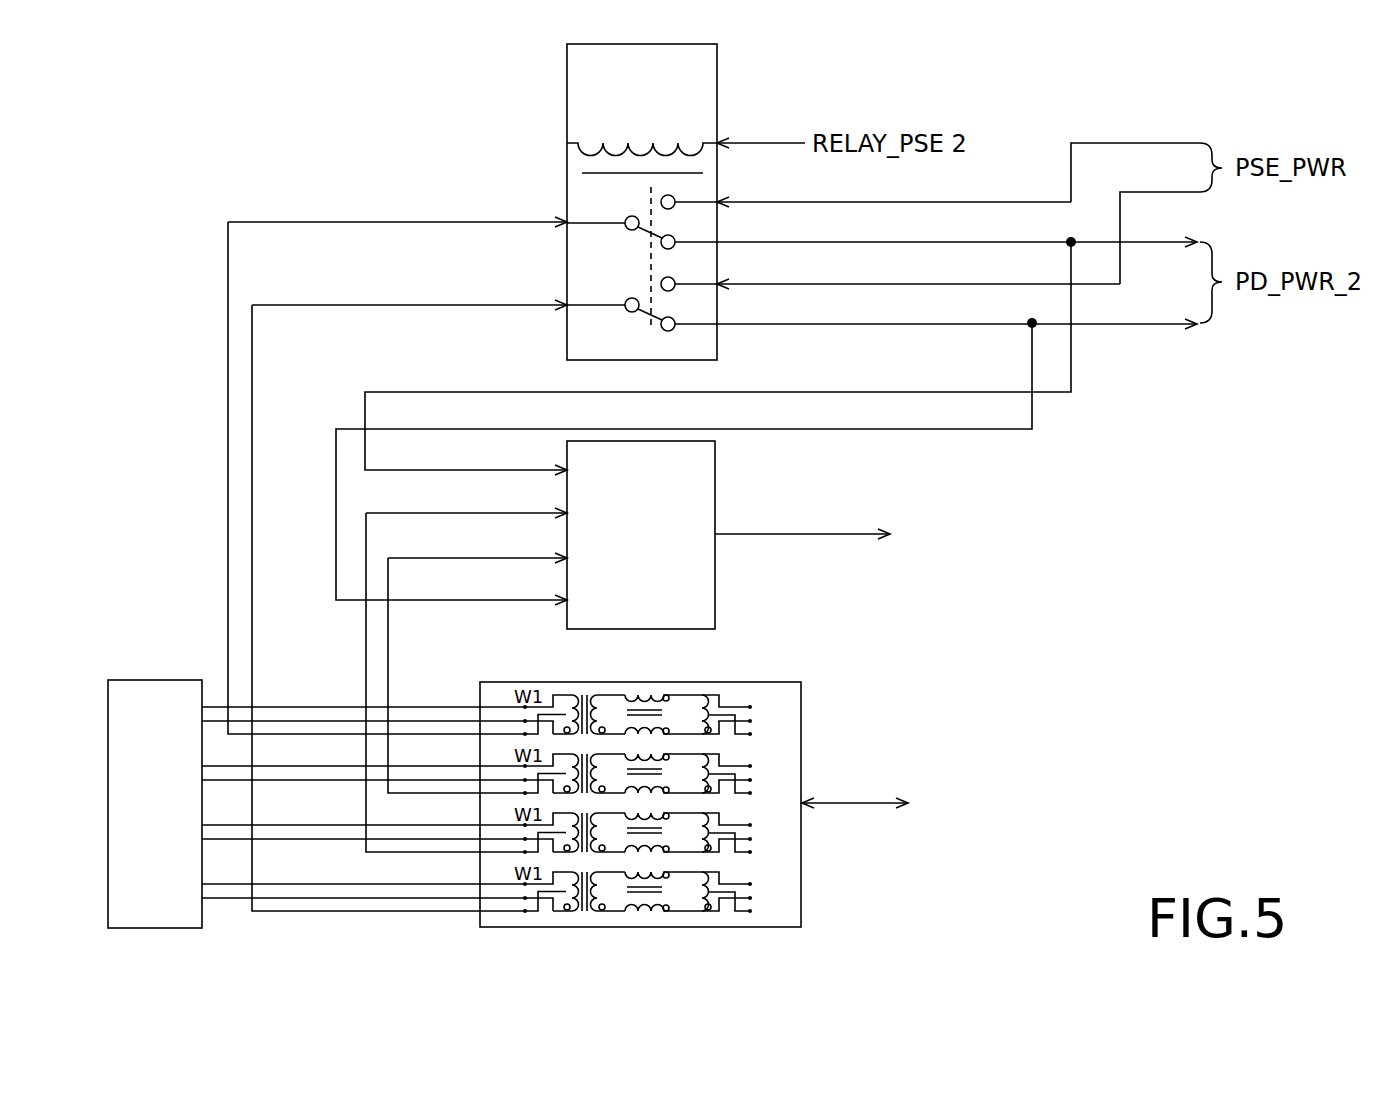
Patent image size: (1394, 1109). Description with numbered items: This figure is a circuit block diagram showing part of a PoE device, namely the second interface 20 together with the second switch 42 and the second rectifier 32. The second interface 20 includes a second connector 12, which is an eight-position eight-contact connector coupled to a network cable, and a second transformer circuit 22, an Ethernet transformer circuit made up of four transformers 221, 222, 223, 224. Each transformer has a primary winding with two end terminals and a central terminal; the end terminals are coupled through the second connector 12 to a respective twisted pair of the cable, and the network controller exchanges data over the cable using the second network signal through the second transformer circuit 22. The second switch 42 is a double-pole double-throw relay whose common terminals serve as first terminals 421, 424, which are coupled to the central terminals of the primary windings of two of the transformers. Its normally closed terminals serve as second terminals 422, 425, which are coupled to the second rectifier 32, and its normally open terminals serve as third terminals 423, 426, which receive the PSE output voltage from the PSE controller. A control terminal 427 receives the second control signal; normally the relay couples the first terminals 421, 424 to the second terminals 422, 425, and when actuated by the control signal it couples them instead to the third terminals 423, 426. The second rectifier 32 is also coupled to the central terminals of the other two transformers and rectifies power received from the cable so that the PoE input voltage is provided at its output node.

The second switch 42 is at (567, 84).
The control terminal 427 is at (722, 138).
The first terminal 424 is at (565, 218).
The first terminal 421 is at (565, 308).
The third terminal 426 is at (722, 208).
The second terminal 425 is at (722, 248).
The third terminal 423 is at (722, 290).
The second terminal 422 is at (722, 330).
The second interface 20 is at (198, 662).
The second connector 12 is at (108, 805).
The second rectifier 32 is at (715, 603).
The second transformer circuit 22 is at (721, 802).
The transformer 221 is at (588, 918).
The transformer 222 is at (619, 859).
The transformer 223 is at (618, 746).
The transformer 224 is at (587, 688).